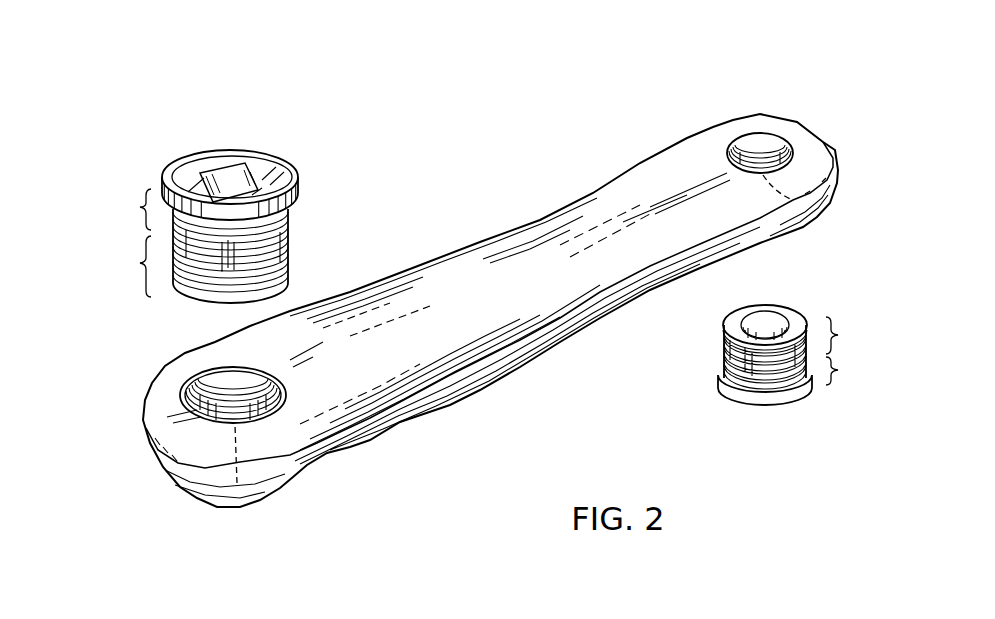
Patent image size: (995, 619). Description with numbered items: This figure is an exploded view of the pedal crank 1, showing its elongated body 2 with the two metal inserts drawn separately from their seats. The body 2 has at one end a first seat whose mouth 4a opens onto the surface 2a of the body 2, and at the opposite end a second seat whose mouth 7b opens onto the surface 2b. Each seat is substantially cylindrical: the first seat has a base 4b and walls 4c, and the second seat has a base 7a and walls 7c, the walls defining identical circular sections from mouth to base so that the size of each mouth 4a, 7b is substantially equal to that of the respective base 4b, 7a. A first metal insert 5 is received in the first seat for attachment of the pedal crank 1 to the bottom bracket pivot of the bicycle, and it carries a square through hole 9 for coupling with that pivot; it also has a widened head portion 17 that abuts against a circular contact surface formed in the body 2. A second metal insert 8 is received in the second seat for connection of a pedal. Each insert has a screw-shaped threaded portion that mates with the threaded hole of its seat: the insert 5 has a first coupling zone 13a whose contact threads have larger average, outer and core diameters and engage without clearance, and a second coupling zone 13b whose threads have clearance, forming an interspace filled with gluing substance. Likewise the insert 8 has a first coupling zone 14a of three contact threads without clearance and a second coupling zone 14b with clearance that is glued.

The pedal crank 1 is at (543, 90).
The elongated body 2 is at (593, 208).
The surface of the body 2a is at (468, 283).
The surface of the body 2b is at (454, 414).
The mouth 4a is at (183, 393).
The base 4b is at (237, 484).
The walls 4c is at (203, 388).
The first metal insert 5 is at (296, 152).
The base 7a is at (780, 137).
The mouth 7b is at (827, 203).
The walls 7c is at (747, 137).
The second metal insert 8 is at (728, 404).
The through hole 9 is at (228, 184).
The first coupling zone 13a is at (140, 207).
The second coupling zone 13b is at (140, 263).
The first coupling zone 14a is at (834, 366).
The second coupling zone 14b is at (830, 320).
The widened head portion 17 is at (299, 202).